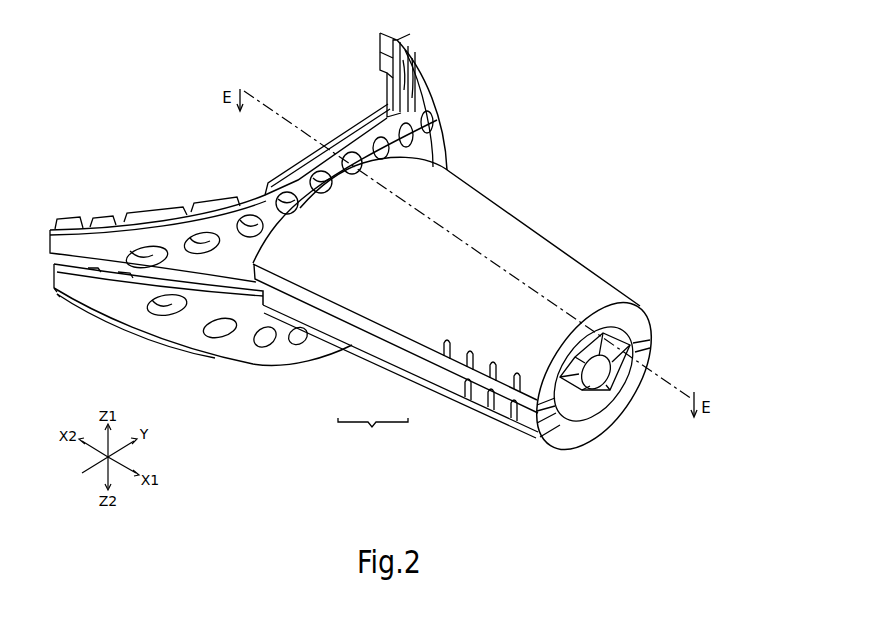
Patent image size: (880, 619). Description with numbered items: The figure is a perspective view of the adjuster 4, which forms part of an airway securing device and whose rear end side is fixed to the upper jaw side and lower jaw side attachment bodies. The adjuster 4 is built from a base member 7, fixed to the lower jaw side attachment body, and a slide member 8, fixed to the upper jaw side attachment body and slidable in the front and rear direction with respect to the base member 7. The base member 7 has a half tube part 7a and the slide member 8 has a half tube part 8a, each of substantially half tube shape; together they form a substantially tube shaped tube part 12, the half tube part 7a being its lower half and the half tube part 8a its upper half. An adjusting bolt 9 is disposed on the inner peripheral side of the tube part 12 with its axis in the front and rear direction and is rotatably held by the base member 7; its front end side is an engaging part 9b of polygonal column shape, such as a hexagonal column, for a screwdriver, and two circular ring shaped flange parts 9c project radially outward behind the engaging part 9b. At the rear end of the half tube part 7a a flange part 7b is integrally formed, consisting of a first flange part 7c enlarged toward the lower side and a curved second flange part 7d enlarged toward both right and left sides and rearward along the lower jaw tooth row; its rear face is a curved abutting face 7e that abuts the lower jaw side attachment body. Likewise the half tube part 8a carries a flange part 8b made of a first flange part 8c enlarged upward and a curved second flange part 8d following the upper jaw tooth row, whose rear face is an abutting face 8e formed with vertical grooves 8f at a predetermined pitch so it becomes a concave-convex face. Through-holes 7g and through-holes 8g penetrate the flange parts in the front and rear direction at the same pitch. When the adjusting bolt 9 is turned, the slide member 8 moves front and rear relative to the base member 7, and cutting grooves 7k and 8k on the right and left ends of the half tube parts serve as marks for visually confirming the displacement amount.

The adjuster 4 is at (606, 108).
The base member 7 is at (628, 405).
The half tube part 7a is at (410, 373).
The flange part 7b is at (186, 374).
The first flange part 7c is at (317, 355).
The second flange part 7d is at (92, 311).
The abutting face 7e is at (388, 104).
The through-holes 7g is at (170, 312).
The cutting grooves 7k is at (469, 401).
The slide member 8 is at (564, 257).
The half tube part 8a is at (370, 330).
The flange part 8b is at (313, 149).
The first flange part 8c is at (293, 165).
The second flange part 8d is at (398, 50).
The abutting face 8e is at (380, 46).
The grooves 8f is at (88, 222).
The through-holes 8g is at (203, 250).
The cutting grooves 8k is at (448, 344).
The adjusting bolt 9 is at (595, 405).
The engaging part 9b is at (592, 400).
The flange parts 9c is at (584, 399).
The tube part 12 is at (373, 432).